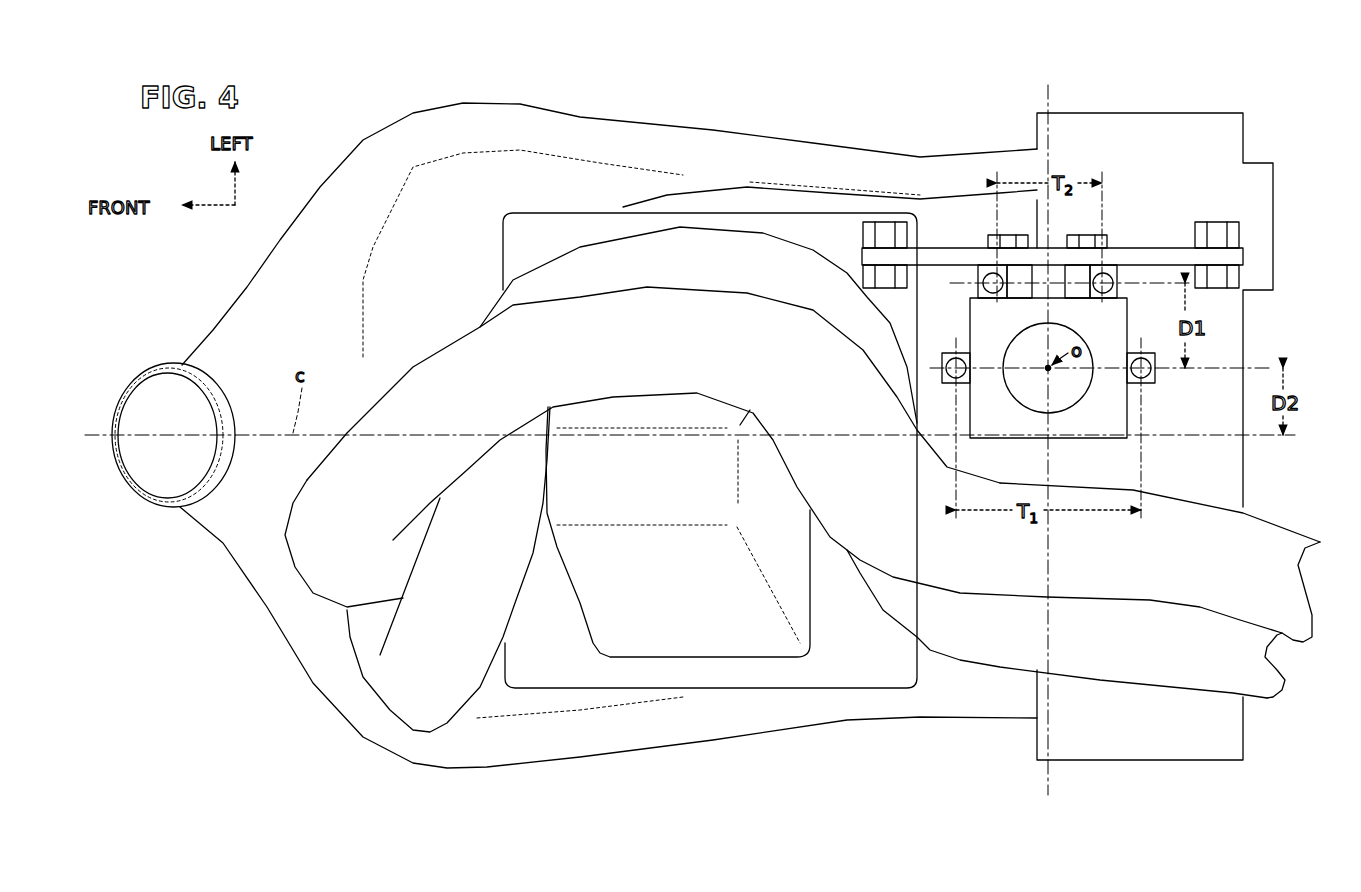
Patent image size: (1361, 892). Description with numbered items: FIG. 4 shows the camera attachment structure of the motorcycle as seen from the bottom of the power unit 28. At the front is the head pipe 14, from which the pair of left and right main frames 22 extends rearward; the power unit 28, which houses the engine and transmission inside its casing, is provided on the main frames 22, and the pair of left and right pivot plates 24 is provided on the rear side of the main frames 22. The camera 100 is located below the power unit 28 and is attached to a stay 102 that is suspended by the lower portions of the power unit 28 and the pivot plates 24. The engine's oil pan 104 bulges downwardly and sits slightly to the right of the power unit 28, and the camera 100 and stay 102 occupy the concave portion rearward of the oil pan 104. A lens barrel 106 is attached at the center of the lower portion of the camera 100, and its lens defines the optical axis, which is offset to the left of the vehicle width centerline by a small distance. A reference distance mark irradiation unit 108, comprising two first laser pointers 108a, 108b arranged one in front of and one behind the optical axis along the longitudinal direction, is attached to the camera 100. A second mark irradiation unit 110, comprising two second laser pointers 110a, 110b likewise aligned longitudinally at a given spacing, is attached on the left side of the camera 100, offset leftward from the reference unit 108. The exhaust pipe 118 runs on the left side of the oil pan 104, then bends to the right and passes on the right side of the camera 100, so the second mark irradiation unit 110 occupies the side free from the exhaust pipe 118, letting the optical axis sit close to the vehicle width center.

The head pipe 14 is at (148, 397).
The main frames 22 is at (697, 141).
The pivot plates 24 is at (1207, 125).
The power unit 28 is at (518, 250).
The camera 100 is at (1113, 410).
The stay 102 is at (1177, 255).
The oil pan 104 is at (707, 640).
The lens barrel 106 is at (1068, 397).
The reference distance mark irradiation unit 108 is at (1030, 394).
The first laser pointer 108a is at (950, 352).
The first laser pointer 108b is at (1147, 352).
The second mark irradiation unit 110 is at (1017, 205).
The second laser pointer 110a is at (977, 277).
The second laser pointer 110b is at (1107, 273).
The exhaust pipe 118 is at (1278, 530).